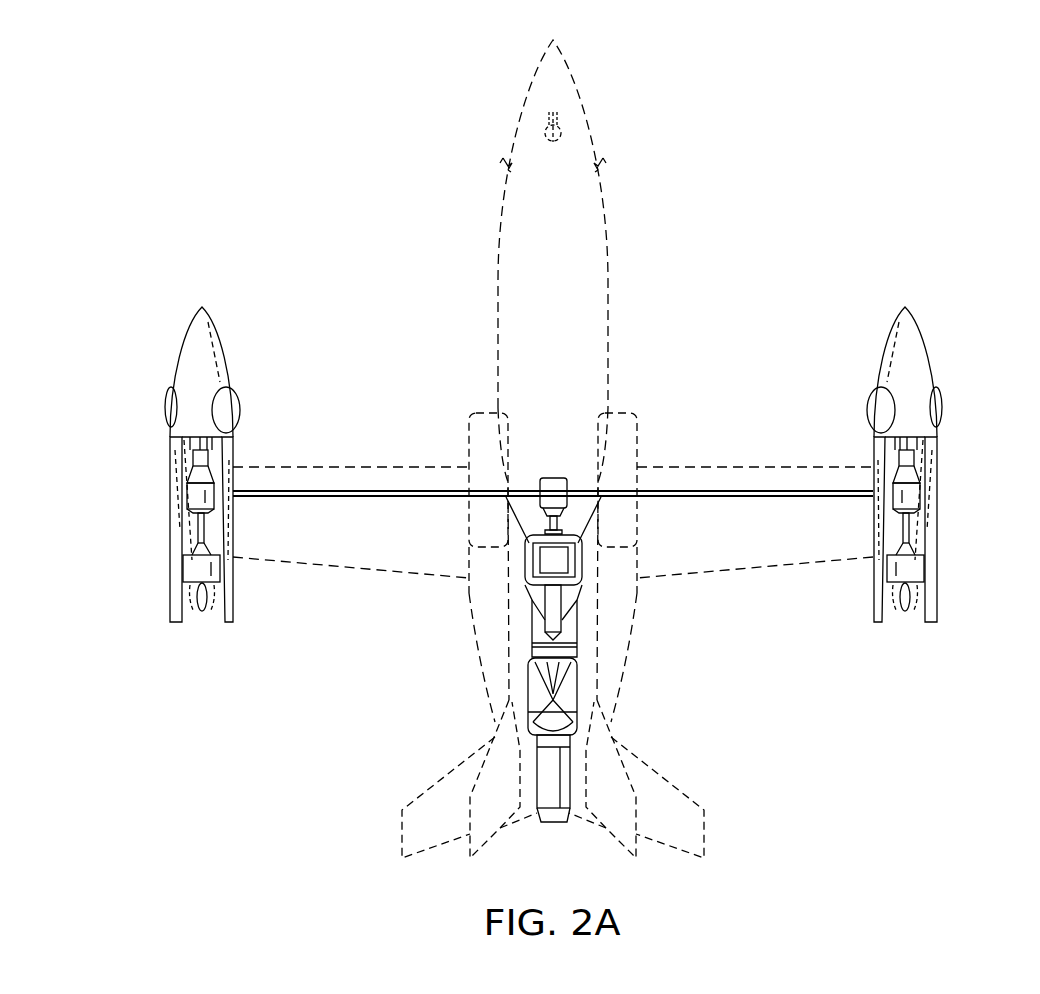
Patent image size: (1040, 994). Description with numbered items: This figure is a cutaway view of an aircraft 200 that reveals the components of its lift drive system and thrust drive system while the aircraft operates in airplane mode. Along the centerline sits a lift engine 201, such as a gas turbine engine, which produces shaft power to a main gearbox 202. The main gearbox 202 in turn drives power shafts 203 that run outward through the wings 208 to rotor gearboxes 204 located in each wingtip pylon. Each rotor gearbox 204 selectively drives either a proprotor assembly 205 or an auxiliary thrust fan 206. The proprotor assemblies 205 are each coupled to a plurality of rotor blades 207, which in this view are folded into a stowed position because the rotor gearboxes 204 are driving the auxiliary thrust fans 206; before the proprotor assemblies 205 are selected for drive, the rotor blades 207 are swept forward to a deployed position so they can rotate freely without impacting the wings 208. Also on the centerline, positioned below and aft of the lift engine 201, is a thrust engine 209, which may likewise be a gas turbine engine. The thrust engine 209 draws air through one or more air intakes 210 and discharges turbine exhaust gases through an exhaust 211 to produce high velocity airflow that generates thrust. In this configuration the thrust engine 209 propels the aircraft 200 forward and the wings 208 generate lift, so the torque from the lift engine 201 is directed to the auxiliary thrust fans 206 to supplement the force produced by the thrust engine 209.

The aircraft 200 is at (736, 75).
The lift engine 201 is at (556, 572).
The main gearbox 202 is at (553, 477).
The power shafts 203 is at (342, 497).
The rotor gearboxes 204 is at (186, 498).
The proprotor assembly 205 is at (166, 358).
The auxiliary thrust fan 206 is at (193, 570).
The rotor blades 207 is at (170, 455).
The wings 208 is at (349, 570).
The thrust engine 209 is at (552, 672).
The air intakes 210 is at (484, 410).
The exhaust 211 is at (556, 824).